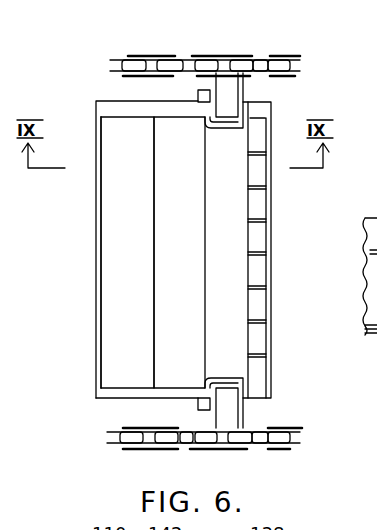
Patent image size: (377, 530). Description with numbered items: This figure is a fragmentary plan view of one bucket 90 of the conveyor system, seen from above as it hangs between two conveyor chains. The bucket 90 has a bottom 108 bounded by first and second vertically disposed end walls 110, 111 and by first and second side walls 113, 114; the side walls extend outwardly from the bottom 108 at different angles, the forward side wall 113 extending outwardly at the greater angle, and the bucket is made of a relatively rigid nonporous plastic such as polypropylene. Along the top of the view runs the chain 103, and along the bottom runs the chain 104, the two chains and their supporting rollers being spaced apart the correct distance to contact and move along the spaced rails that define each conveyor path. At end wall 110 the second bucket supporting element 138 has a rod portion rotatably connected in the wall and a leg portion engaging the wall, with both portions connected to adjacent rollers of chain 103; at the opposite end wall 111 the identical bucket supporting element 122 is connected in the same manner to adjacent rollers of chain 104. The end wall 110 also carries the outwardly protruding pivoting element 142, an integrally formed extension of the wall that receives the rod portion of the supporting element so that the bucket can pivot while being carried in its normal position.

The bucket 90 is at (84, 221).
The chain 103 is at (116, 56).
The chain 104 is at (121, 448).
The bottom 108 is at (201, 257).
The first end wall 110 is at (112, 100).
The second end wall 111 is at (119, 398).
The first side wall 113 is at (96, 293).
The second side wall 114 is at (272, 205).
The bucket supporting element 122 is at (261, 417).
The second bucket supporting element 138 is at (260, 95).
The second pivoting element 142 is at (197, 90).